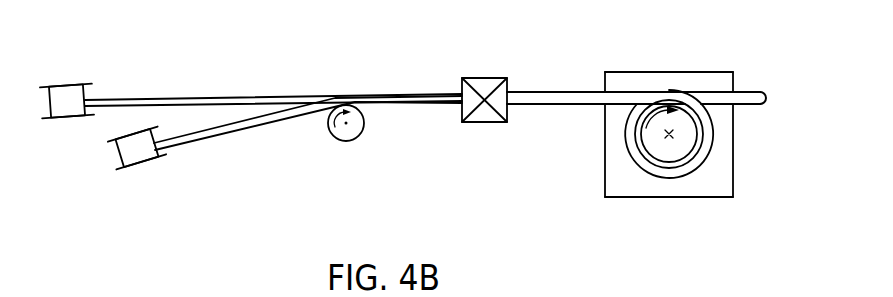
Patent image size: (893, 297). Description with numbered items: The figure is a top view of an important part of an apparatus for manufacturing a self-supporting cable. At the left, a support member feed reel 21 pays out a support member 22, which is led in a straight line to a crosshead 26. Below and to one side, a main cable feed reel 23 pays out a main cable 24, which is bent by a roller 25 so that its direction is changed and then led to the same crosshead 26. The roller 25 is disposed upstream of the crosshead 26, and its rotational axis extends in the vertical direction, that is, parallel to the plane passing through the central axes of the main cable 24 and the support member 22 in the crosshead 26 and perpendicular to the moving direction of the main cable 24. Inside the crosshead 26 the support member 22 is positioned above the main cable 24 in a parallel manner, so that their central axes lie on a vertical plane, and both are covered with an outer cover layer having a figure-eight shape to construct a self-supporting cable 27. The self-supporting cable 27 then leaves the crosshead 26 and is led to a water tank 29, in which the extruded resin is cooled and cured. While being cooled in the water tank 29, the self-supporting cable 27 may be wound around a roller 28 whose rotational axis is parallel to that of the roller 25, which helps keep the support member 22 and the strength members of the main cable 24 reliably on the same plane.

The support member feed reel 21 is at (74, 84).
The support member 22 is at (167, 99).
The main cable feed reel 23 is at (143, 166).
The main cable 24 is at (228, 133).
The roller 25 is at (358, 137).
The crosshead 26 is at (495, 78).
The self-supporting cable 27 is at (562, 105).
The roller 28 is at (668, 156).
The water tank 29 is at (710, 186).